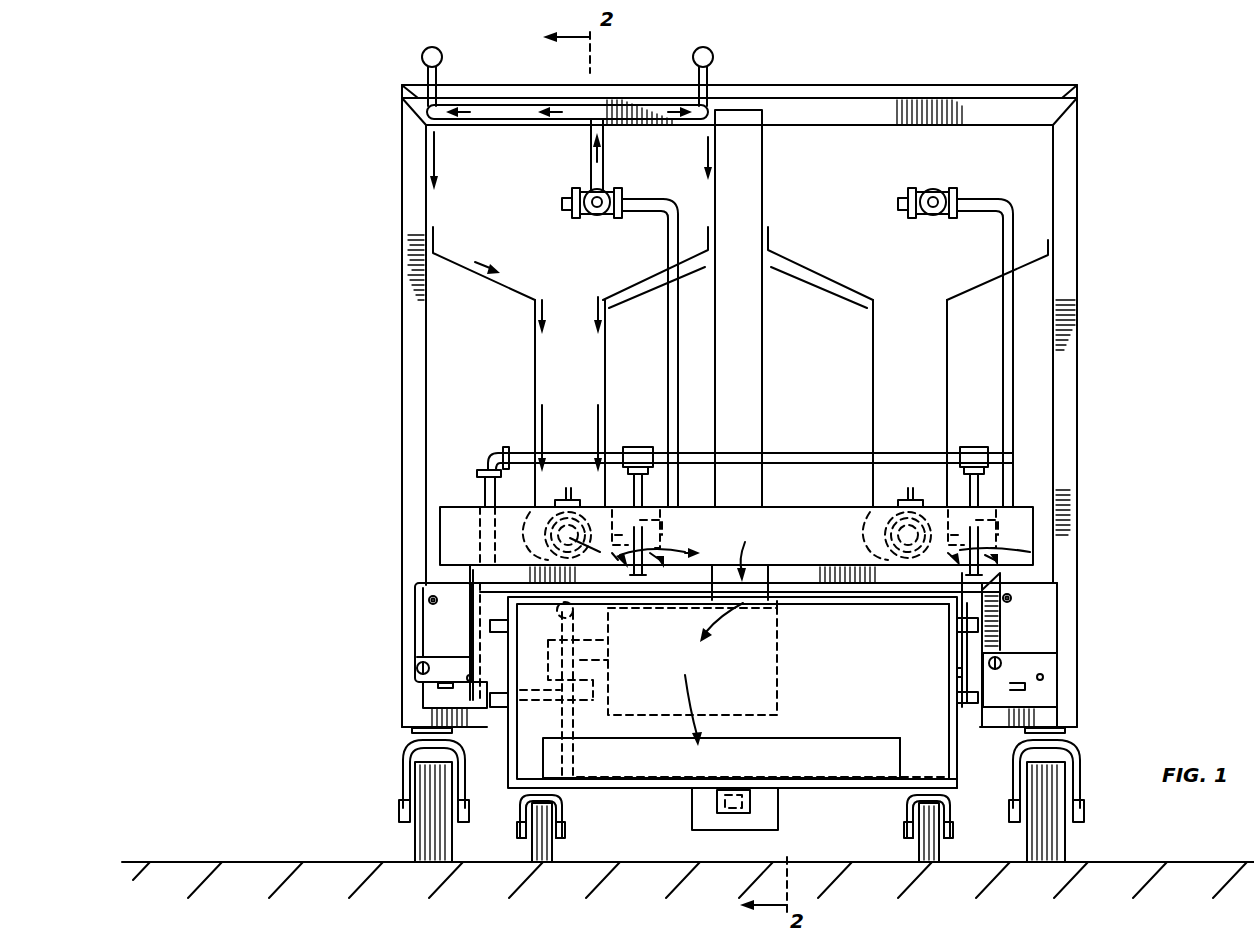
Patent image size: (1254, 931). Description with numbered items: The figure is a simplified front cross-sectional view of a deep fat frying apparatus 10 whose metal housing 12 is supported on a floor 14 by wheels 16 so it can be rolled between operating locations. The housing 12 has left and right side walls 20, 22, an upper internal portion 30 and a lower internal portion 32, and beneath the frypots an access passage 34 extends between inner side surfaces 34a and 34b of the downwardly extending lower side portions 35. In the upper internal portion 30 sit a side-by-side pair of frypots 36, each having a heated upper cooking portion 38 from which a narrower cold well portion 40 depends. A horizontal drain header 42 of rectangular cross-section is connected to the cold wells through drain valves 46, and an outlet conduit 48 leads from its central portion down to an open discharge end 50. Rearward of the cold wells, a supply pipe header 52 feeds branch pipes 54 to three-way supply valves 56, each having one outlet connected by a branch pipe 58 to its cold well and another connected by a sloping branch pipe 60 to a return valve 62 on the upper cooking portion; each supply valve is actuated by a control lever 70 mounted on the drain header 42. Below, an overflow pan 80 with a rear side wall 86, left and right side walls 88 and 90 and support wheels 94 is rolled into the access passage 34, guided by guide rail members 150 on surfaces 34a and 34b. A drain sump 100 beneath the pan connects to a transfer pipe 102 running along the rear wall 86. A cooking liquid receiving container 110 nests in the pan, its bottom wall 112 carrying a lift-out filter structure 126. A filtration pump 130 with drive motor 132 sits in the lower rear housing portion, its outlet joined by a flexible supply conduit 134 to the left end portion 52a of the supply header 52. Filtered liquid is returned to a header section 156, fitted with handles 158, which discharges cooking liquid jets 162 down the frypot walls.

The deep fat frying apparatus 10 is at (345, 108).
The housing 12 is at (388, 176).
The floor 14 is at (232, 862).
The wheels 16 is at (415, 845).
The left side wall 20 is at (402, 396).
The right side wall 22 is at (1080, 382).
The upper internal portion 30 is at (440, 297).
The lower internal portion 32 is at (1010, 590).
The access passage 34 is at (490, 718).
The inner side surface 34a is at (490, 720).
The inner side surface 34b is at (978, 740).
The lower side portions 35 is at (410, 690).
The frypots 36 is at (505, 298).
The upper cooking portion 38 is at (425, 215).
The cold well portion 40 is at (535, 384).
The drain header 42 is at (832, 507).
The drain valves 46 is at (590, 488).
The outlet conduit 48 is at (770, 575).
The discharge end 50 is at (735, 622).
The supply pipe header 52 is at (800, 453).
The left end portion 52a is at (512, 447).
The branch pipes 54 is at (655, 490).
The supply valves 56 is at (670, 535).
The branch pipe 58 is at (632, 514).
The branch pipe 60 is at (667, 326).
The return valve 62 is at (606, 189).
The control lever 70 is at (686, 553).
The overflow pan 80 is at (962, 778).
The rear side wall 86 is at (864, 644).
The left side wall 88 is at (510, 752).
The right side wall 90 is at (957, 672).
The support wheels 94 is at (564, 845).
The drain sump 100 is at (692, 812).
The transfer pipe 102 is at (578, 760).
The cooking liquid receiving container 110 is at (522, 578).
The bottom wall 112 is at (935, 770).
The filter structure 126 is at (880, 738).
The filtration pump 130 is at (622, 630).
The drive motor 132 is at (792, 670).
The flexible supply conduit 134 is at (478, 478).
The guide rail members 150 is at (393, 648).
The header section 156 is at (492, 107).
The handles 158 is at (424, 50).
The cooking liquid jets 162 is at (440, 152).